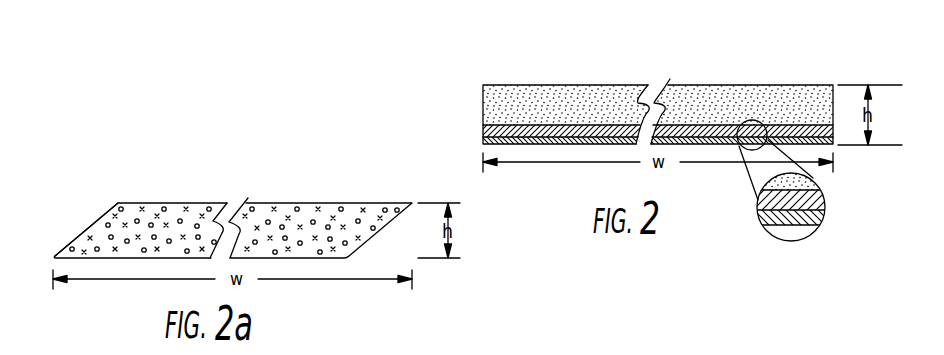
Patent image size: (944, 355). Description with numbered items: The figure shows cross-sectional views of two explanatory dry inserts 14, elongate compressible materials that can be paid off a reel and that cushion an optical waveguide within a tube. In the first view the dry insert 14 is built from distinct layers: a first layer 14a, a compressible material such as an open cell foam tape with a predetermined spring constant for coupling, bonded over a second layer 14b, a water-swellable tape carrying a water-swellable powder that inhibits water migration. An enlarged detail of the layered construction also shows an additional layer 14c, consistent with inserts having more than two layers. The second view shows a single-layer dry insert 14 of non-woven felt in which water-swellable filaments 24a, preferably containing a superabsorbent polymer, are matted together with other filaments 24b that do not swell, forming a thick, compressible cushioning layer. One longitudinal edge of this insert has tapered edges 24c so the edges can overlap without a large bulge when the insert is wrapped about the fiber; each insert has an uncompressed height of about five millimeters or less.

In FIG. 2, the dry insert 14 is at (639, 131).
In FIG. 2A, the dry insert 14 is at (233, 208).
In FIG. 2, the first layer 14a is at (495, 110).
In FIG. 2, the second layer 14b is at (490, 130).
In FIG. 2, the bottom layer 14c is at (822, 215).
In FIG. 2A, the water-swellable filaments 24a is at (340, 210).
In FIG. 2A, the other filaments 24b is at (275, 208).
In FIG. 2A, the tapered edges 24c is at (103, 212).